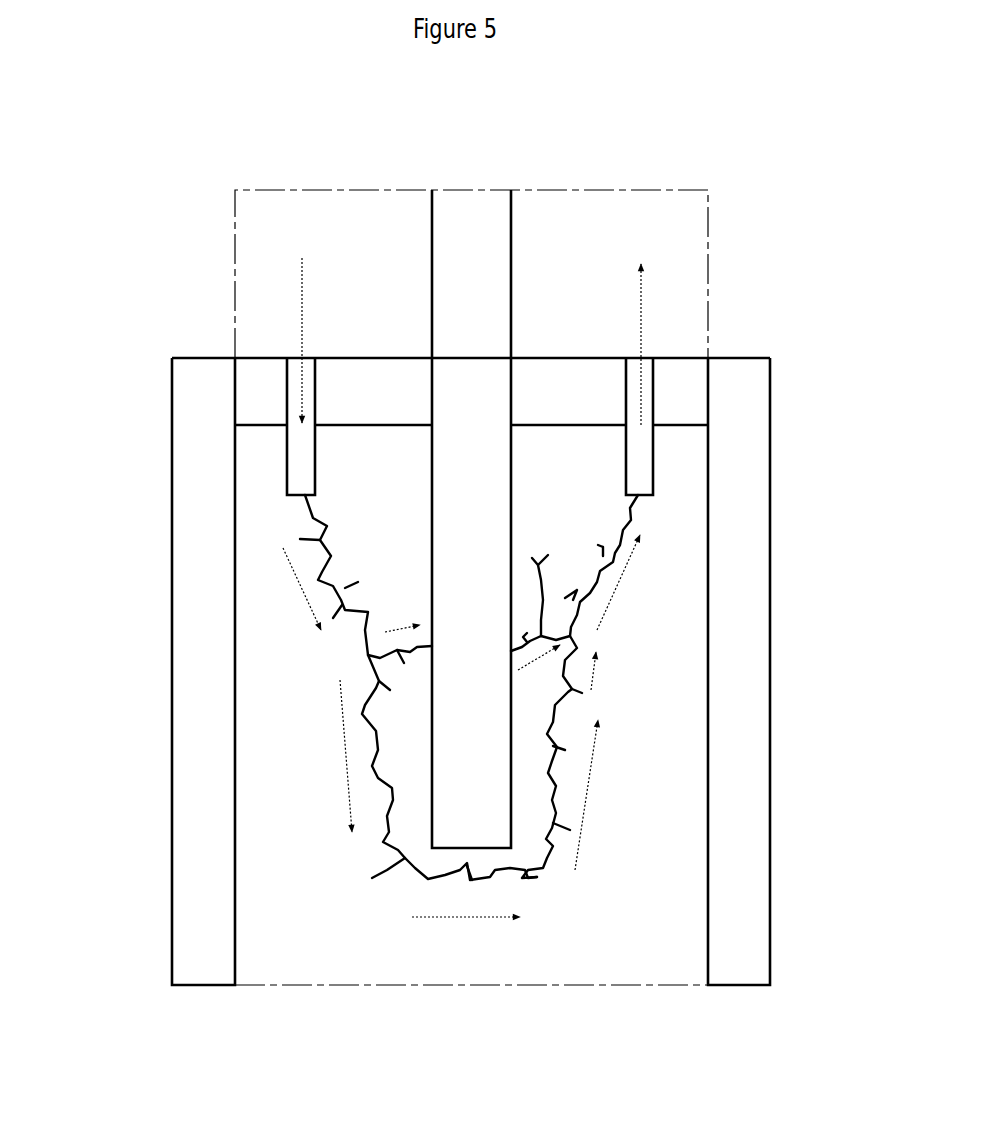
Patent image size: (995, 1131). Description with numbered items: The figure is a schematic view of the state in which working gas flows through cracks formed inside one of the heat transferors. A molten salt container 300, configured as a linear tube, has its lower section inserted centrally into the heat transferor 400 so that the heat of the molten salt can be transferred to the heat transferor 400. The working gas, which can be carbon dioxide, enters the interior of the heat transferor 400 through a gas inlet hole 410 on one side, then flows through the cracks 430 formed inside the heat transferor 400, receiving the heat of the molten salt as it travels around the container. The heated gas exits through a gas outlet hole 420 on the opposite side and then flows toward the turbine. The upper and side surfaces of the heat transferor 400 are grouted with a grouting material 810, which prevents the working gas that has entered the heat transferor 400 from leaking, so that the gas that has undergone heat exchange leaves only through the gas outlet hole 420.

The molten salt container 300 is at (496, 248).
The heat transferor 400 is at (265, 882).
The gas inlet hole 410 is at (287, 462).
The gas outlet hole 420 is at (640, 461).
The crack 430 is at (368, 628).
The grouting material 810 is at (685, 378).